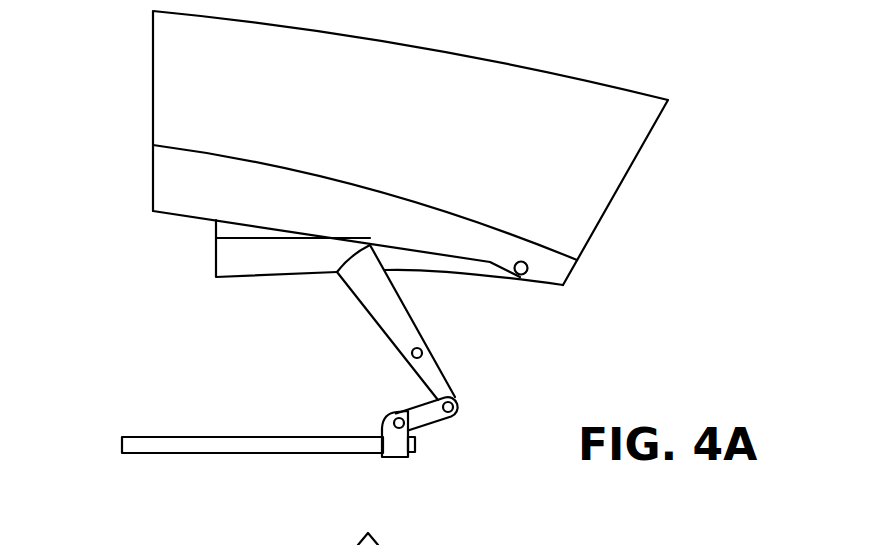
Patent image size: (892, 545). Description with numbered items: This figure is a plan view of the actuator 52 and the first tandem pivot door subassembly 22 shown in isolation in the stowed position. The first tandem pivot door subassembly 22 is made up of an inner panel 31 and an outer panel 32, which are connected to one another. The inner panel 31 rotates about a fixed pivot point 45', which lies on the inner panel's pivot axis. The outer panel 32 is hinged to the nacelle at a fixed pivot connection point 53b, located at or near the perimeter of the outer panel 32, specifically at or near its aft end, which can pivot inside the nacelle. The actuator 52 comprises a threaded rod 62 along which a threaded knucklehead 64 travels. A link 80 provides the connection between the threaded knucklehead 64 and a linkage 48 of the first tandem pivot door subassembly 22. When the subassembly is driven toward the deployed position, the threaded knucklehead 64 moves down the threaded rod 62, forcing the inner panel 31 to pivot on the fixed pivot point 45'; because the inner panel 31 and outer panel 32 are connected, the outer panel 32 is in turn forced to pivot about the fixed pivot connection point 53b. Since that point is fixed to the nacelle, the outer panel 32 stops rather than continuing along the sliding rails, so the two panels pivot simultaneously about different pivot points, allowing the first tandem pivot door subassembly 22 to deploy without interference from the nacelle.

The first tandem pivot door subassembly 22 is at (622, 60).
The outer panel 32 is at (168, 79).
The inner panel 31 is at (230, 258).
The linkage 48 is at (378, 303).
The fixed pivot connection point 53b is at (523, 277).
The fixed pivot point 45' is at (462, 368).
The link 80 is at (432, 415).
The threaded knucklehead 64 is at (397, 452).
The threaded rod 62 is at (155, 443).
The actuator 52 is at (277, 477).